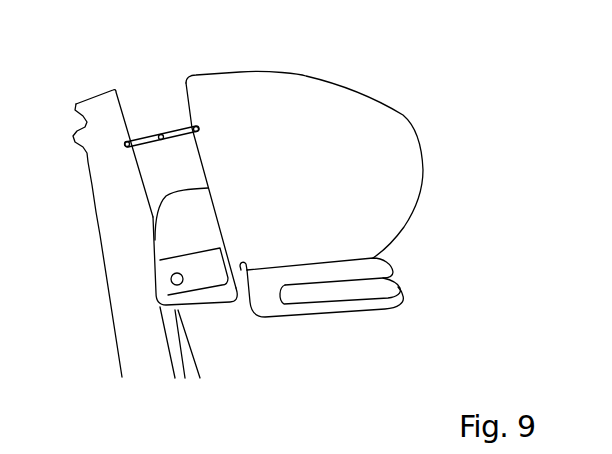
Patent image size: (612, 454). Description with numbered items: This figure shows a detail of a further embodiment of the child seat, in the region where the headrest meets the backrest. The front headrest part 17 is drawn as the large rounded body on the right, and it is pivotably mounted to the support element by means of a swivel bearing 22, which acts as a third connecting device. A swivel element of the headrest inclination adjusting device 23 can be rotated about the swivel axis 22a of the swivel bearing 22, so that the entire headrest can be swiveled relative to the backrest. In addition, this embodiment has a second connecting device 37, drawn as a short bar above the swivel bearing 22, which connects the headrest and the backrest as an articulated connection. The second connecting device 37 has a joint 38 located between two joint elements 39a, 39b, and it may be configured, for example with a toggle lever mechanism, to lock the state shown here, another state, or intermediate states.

The front headrest part 17 is at (356, 123).
The swivel bearing 22 is at (156, 270).
The swivel axis 22a is at (172, 283).
The headrest inclination adjusting device 23 is at (124, 223).
The second connecting device 37 is at (173, 125).
The joint 38 is at (160, 134).
The joint element 39a is at (127, 141).
The joint element 39b is at (186, 126).